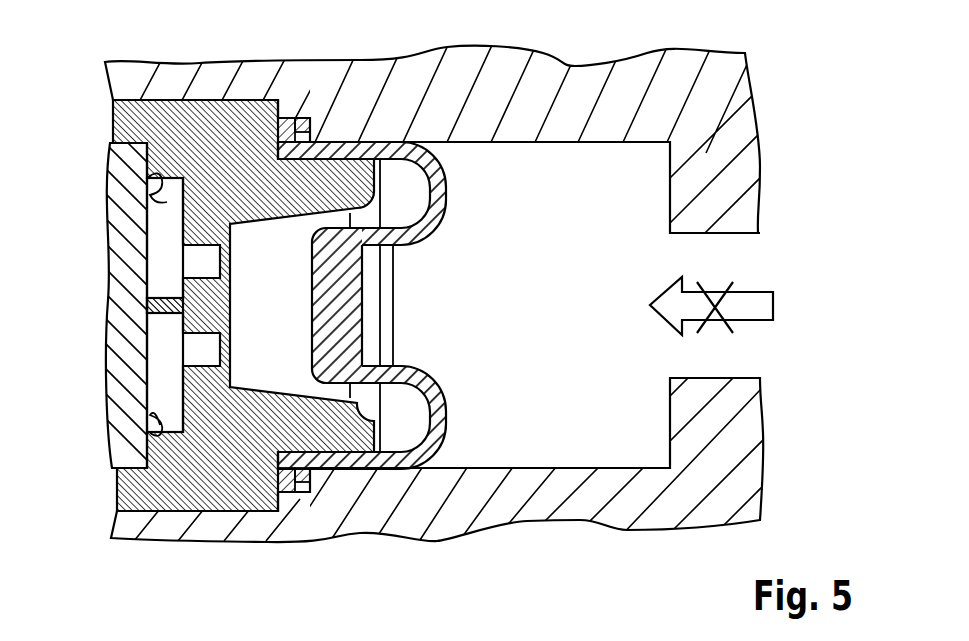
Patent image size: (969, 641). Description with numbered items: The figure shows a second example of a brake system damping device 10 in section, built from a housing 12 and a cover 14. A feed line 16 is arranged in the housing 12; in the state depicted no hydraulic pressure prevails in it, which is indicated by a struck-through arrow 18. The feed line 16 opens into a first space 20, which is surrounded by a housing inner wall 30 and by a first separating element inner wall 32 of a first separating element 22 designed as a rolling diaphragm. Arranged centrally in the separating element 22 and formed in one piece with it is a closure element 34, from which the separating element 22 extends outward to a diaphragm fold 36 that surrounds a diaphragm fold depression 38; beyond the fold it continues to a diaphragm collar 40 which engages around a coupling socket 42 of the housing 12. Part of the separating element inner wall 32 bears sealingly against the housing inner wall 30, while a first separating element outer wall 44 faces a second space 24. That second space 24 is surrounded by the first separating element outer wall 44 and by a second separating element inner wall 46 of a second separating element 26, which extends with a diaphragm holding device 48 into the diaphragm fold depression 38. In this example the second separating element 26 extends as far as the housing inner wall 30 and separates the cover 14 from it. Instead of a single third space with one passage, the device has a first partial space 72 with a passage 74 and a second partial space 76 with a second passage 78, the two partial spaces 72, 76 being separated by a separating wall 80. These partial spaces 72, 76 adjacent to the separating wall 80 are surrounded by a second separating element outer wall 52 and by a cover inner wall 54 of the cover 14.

The brake system damping device 10 is at (782, 53).
The housing 12 is at (720, 107).
The cover 14 is at (118, 200).
The feed line 16 is at (745, 257).
The struck-through arrow 18 is at (773, 310).
The first space 20 is at (645, 440).
The first separating element 22 is at (347, 148).
The second space 24 is at (267, 247).
The second separating element 26 is at (150, 137).
The housing inner wall 30 is at (627, 147).
The first separating element inner wall 32 is at (362, 290).
The closure element 34 is at (328, 330).
The diaphragm fold 36 is at (446, 190).
The diaphragm fold depression 38 is at (402, 202).
The diaphragm collar 40 is at (292, 130).
The coupling socket 42 is at (303, 127).
The first separating element outer wall 44 is at (311, 301).
The second separating element inner wall 46 is at (264, 392).
The diaphragm holding device 48 is at (360, 180).
The second separating element outer wall 52 is at (183, 222).
The cover inner wall 54 is at (147, 178).
The first partial space 72 is at (163, 240).
The passage 74 is at (200, 265).
The second partial space 76 is at (182, 395).
The second passage 78 is at (160, 378).
The separating wall 80 is at (200, 352).